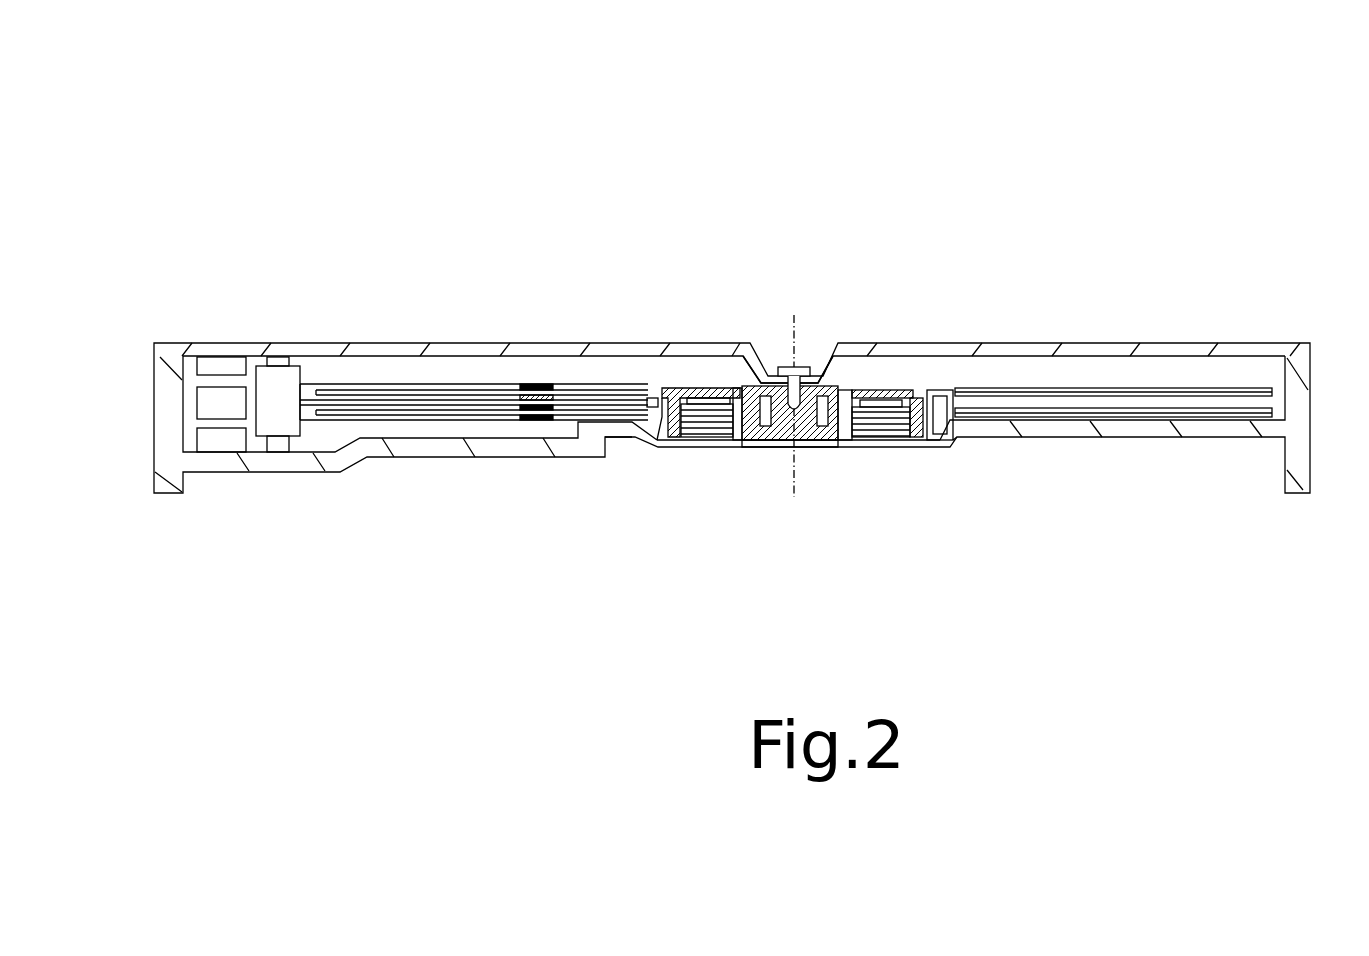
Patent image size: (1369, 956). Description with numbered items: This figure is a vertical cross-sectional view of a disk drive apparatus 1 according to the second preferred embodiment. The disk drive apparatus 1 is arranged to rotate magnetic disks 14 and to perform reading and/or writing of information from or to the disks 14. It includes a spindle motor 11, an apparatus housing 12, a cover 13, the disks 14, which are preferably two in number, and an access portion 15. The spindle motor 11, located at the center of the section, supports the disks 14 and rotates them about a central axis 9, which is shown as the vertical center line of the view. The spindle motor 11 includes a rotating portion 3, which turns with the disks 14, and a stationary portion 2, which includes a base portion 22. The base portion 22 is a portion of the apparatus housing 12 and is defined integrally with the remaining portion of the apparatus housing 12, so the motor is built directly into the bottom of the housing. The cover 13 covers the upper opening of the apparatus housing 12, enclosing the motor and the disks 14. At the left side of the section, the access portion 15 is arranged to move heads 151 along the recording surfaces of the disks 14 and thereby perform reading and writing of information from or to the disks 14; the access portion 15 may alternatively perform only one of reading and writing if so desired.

The disk drive apparatus 1 is at (732, 299).
The stationary portion 2 is at (900, 453).
The rotating portion 3 is at (876, 384).
The central axis 9 is at (795, 334).
The spindle motor 11 is at (814, 450).
The apparatus housing 12 is at (1050, 428).
The cover 13 is at (1107, 343).
The magnetic disks 14 is at (993, 388).
The access portion 15 is at (431, 383).
The base portion 22 is at (684, 440).
The heads 151 is at (537, 383).